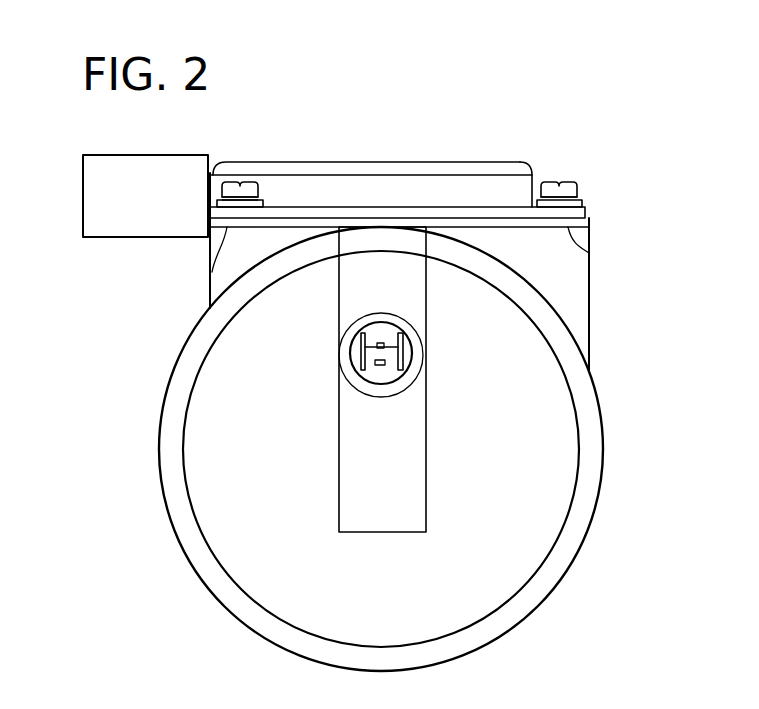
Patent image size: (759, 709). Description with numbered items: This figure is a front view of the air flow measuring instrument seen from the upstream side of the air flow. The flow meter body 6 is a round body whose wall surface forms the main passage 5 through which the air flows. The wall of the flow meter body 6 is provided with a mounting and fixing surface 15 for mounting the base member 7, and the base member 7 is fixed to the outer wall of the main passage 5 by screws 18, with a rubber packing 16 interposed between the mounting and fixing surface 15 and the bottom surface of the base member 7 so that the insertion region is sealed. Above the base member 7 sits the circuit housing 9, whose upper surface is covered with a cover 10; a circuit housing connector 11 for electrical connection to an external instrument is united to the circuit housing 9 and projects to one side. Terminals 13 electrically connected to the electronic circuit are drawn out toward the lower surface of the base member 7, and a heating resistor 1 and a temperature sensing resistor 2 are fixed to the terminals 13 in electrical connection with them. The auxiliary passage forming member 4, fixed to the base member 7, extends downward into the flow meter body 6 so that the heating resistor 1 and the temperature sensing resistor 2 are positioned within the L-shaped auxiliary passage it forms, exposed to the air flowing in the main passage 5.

The heating resistor 1 is at (381, 366).
The temperature sensing resistor 2 is at (380, 343).
The auxiliary passage forming member 4 is at (426, 465).
The main passage 5 is at (555, 428).
The flow meter body 6 is at (602, 488).
The base member 7 is at (590, 213).
The circuit housing 9 is at (534, 172).
The cover 10 is at (278, 162).
The circuit housing connector 11 is at (83, 197).
The terminals 13 is at (362, 352).
The mounting and fixing surface 15 is at (589, 253).
The rubber packing 16 is at (212, 272).
The screws 18 is at (231, 182).